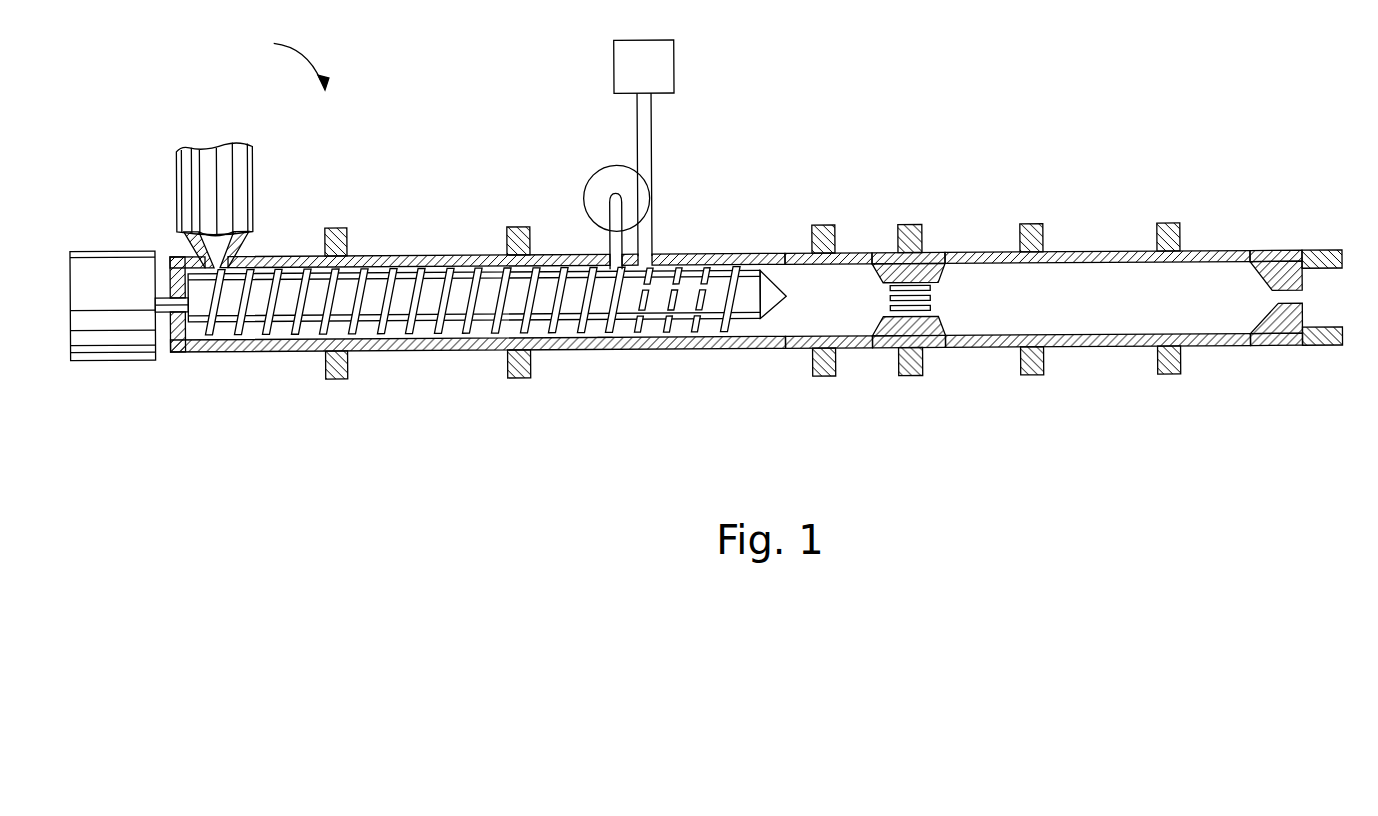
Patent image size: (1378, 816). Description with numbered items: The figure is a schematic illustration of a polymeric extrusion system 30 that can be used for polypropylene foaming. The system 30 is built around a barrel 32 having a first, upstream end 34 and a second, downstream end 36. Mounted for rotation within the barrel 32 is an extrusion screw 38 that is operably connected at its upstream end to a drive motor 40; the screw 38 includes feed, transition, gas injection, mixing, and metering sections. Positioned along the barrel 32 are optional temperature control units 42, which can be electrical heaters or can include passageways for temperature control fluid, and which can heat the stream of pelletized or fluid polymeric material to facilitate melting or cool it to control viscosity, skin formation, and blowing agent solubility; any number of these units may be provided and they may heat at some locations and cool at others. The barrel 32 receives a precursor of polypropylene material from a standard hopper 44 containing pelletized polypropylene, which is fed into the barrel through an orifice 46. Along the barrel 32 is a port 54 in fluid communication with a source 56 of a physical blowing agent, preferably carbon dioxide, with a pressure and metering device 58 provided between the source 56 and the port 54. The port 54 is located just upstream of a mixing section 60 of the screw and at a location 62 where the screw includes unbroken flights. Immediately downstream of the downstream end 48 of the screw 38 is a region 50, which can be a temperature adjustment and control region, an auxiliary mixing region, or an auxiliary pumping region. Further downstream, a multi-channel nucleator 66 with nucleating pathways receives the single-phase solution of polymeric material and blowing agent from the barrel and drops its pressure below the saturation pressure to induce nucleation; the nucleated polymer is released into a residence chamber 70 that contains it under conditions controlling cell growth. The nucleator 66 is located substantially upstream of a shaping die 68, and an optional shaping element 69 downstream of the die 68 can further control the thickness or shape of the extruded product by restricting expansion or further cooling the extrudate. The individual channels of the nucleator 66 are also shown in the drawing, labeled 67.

The extrusion system 30 is at (285, 61).
The barrel 32 is at (243, 352).
The first, upstream end 34 is at (193, 334).
The second, downstream end 36 is at (853, 333).
The extrusion screw 38 is at (430, 285).
The drive motor 40 is at (102, 250).
The temperature control units 42 is at (336, 229).
The hopper 44 is at (208, 166).
The orifice 46 is at (190, 240).
The downstream end of screw 48 is at (777, 307).
The region 50 is at (806, 294).
The port 54 is at (614, 258).
The source of physical blowing agent 56 is at (675, 76).
The pressure and metering device 58 is at (606, 180).
The mixing section 60 is at (708, 349).
The location of unbroken flights 62 is at (600, 350).
The multi-channel nucleator 66 is at (923, 272).
The die plates 67 is at (930, 292).
The shaping die 68 is at (1283, 248).
The shaping element 69 is at (1336, 257).
The residence chamber 70 is at (1106, 284).